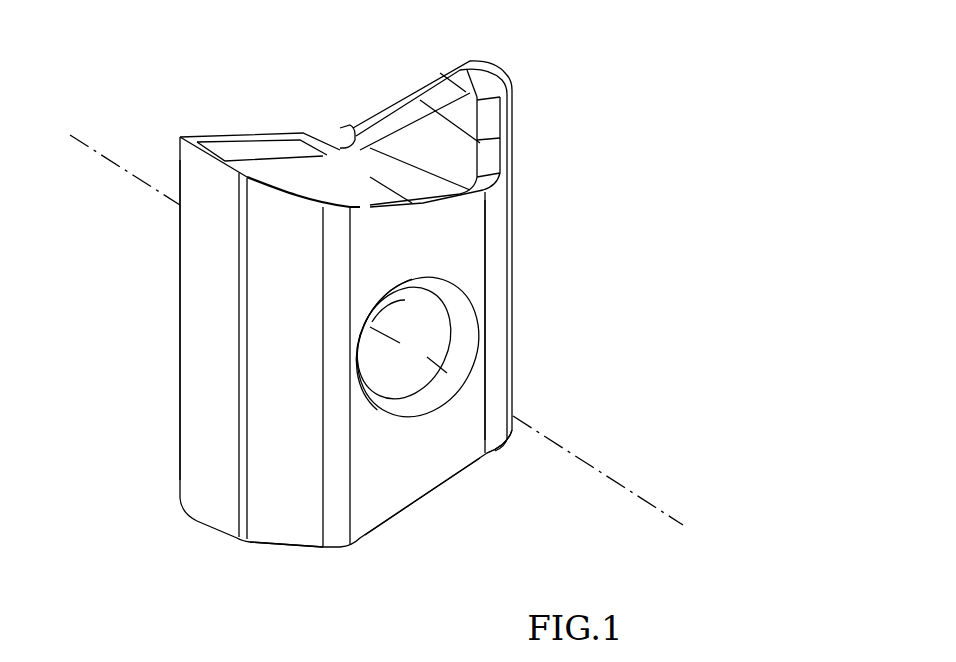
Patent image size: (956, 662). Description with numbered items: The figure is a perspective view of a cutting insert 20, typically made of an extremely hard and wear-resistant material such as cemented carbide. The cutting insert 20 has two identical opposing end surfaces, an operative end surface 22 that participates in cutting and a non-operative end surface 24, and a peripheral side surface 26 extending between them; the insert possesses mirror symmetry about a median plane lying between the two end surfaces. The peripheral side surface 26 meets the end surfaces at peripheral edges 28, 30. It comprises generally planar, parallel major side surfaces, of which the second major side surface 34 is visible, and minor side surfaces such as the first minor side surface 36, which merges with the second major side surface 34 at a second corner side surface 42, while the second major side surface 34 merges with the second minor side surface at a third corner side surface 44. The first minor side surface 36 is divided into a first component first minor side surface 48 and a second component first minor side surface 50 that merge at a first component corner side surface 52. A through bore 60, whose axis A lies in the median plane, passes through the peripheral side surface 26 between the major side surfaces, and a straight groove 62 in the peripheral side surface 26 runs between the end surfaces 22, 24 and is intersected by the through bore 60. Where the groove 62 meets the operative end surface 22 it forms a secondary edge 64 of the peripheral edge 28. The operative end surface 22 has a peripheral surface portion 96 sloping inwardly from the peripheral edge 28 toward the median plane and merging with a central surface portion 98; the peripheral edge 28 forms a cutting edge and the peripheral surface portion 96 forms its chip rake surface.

The cutting insert 20 is at (150, 64).
The operative end surface 22 is at (420, 55).
The non-operative end surface 24 is at (401, 533).
The peripheral side surface 26 is at (450, 234).
The peripheral edge 28 is at (396, 100).
The peripheral edge 30 is at (448, 480).
The second major side surface 34 is at (453, 445).
The first minor side surface 36 is at (205, 437).
The second corner side surface 42 is at (335, 513).
The third corner side surface 44 is at (493, 312).
The first component first minor side surface 48 is at (197, 373).
The second component first minor side surface 50 is at (297, 502).
The first component corner side surface 52 is at (242, 507).
The through bore 60 is at (507, 370).
The groove 62 is at (337, 148).
The secondary edge 64 is at (343, 137).
The peripheral surface portion 96 is at (497, 113).
The central surface portion 98 is at (475, 104).
The axis A is at (607, 475).